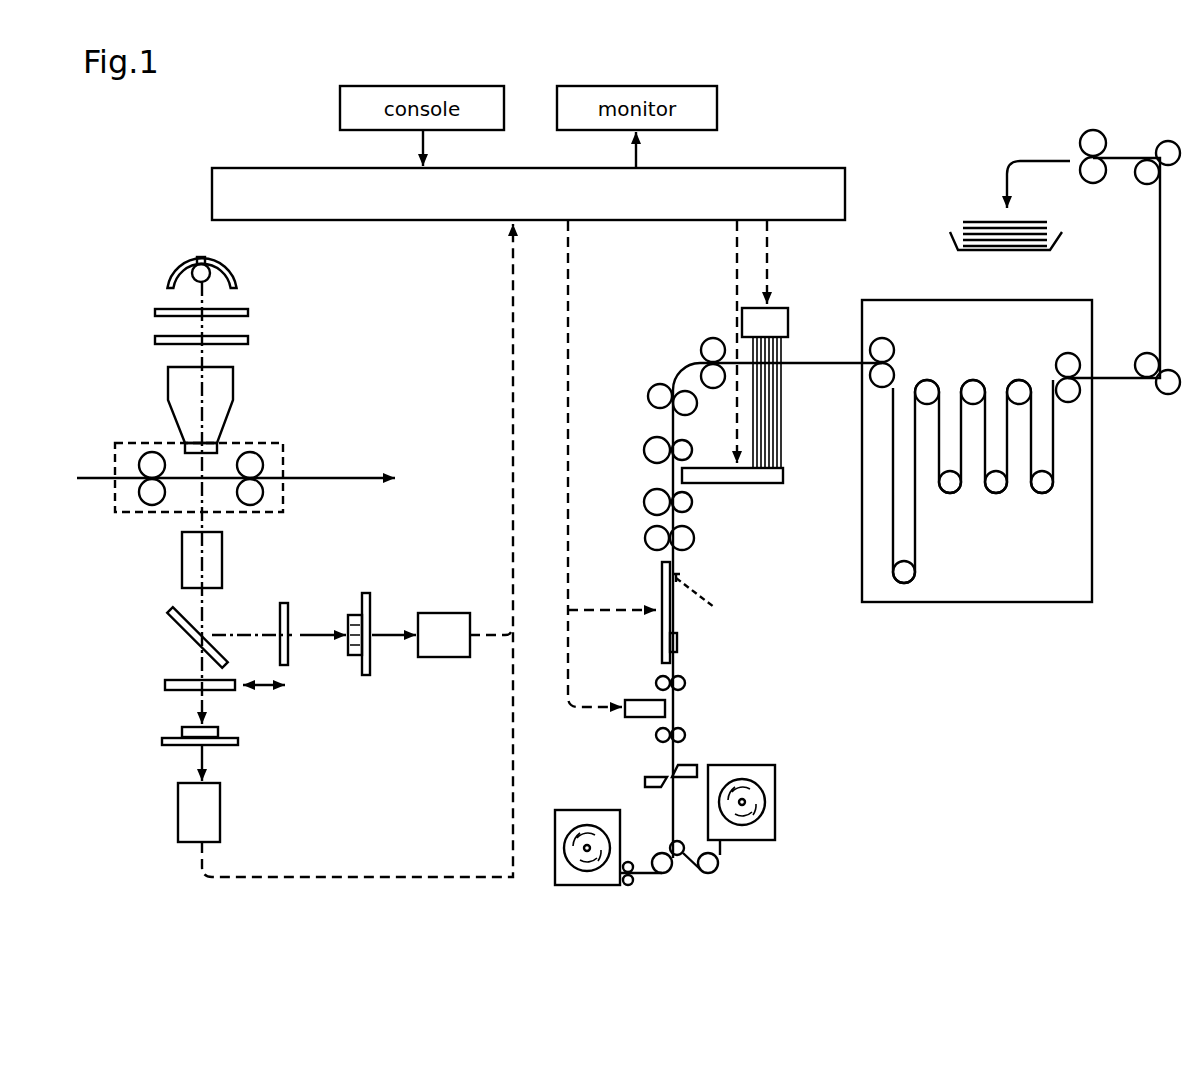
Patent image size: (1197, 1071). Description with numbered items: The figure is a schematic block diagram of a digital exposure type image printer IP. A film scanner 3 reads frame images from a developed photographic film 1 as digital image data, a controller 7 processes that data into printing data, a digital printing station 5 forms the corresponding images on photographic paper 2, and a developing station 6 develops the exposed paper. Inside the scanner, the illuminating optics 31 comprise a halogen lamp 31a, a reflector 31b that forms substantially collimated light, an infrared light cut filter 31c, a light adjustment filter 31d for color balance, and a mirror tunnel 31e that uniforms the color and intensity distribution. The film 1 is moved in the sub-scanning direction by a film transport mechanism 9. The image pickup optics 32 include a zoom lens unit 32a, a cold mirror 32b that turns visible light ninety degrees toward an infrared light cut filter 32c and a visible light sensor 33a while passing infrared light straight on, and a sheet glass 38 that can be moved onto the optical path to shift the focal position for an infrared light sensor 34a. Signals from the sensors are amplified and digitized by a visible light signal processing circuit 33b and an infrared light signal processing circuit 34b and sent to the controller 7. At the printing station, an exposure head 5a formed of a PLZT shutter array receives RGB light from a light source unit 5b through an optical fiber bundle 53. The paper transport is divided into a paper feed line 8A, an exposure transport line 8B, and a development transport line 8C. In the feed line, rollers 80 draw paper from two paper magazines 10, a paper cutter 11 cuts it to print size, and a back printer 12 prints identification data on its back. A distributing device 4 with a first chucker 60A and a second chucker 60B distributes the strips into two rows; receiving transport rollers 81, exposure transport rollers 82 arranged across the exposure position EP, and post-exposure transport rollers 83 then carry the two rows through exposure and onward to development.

The image printer IP is at (163, 150).
The photographic film 1 is at (303, 475).
The photographic paper 2 is at (647, 867).
The film scanner 3 is at (428, 338).
The distributing device 4 is at (656, 595).
The digital printing station 5 is at (778, 493).
The exposure head 5a is at (783, 477).
The light source unit 5b is at (778, 308).
The optical fiber bundle 53 is at (780, 427).
The developing station 6 is at (917, 296).
The controller 7 is at (402, 221).
The paper feed line 8A is at (795, 853).
The exposure transport line 8B is at (698, 562).
The development transport line 8C is at (992, 512).
The film transport mechanism 9 is at (148, 510).
The paper magazine 10 is at (554, 822).
The paper cutter 11 is at (643, 780).
The back printer 12 is at (638, 700).
The illuminating optics 31 is at (148, 278).
The halogen lamp 31a is at (170, 289).
The reflector 31b is at (234, 288).
The infrared light cut filter 31c is at (249, 313).
The light adjustment filter 31d is at (249, 340).
The mirror tunnel 31e is at (217, 403).
The image pickup optics 32 is at (173, 663).
The zoom lens unit 32a is at (180, 570).
The mirror 32b is at (177, 630).
The infrared light cut filter 32c is at (285, 602).
The visible light sensor 33a is at (355, 663).
The visible light signal processing circuit 33b is at (447, 616).
The infrared light sensor 34a is at (218, 729).
The infrared light signal processing circuit 34b is at (220, 811).
The sheet glass 38 is at (172, 693).
The first chucker 60A is at (678, 643).
The second chucker 60B is at (712, 607).
The rollers 80 is at (666, 874).
The receiving transport rollers 81 is at (650, 546).
The exposure transport rollers 82 is at (643, 450).
The post-exposure transport rollers 83 is at (713, 343).
The exposure position EP is at (666, 478).